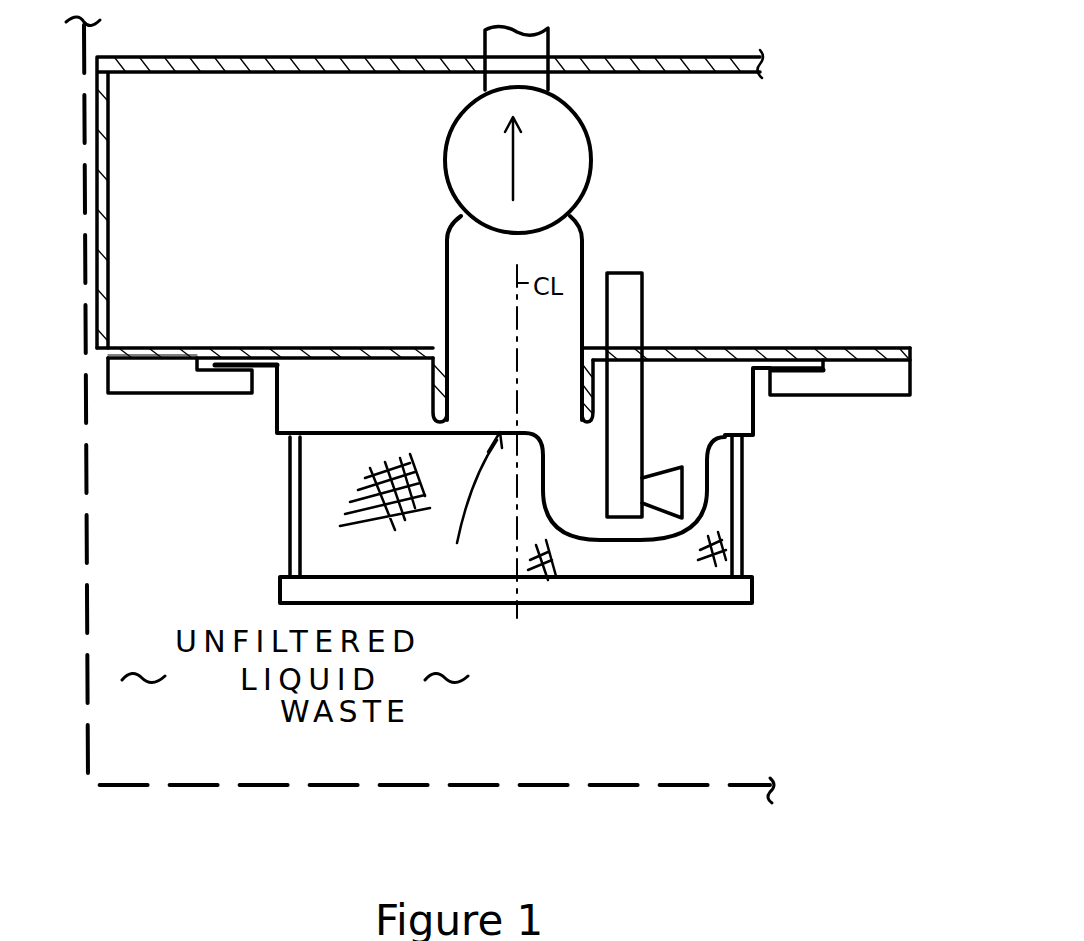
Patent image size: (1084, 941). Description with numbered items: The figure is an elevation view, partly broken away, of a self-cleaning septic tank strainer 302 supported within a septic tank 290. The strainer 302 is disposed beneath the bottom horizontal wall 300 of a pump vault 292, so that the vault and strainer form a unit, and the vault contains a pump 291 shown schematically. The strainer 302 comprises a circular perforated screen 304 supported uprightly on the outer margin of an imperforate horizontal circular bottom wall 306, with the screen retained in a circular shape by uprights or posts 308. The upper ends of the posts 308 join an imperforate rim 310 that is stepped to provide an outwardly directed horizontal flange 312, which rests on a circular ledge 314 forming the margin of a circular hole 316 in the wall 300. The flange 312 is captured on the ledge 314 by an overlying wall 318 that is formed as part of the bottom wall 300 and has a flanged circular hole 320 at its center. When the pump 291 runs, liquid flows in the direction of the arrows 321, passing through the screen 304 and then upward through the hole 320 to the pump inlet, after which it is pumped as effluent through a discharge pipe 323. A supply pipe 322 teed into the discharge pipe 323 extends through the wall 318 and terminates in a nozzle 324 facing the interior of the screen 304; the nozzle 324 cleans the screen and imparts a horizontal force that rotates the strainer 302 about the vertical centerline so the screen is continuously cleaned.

The septic tank 290 is at (283, 790).
The pump 291 is at (441, 186).
The pump vault 292 is at (138, 57).
The bottom horizontal wall 300 is at (160, 370).
The self-cleaning septic tank strainer 302 is at (780, 638).
The circular perforated screen 304 is at (735, 533).
The horizontal circular bottom wall 306 is at (620, 598).
The uprights or posts 308 is at (768, 495).
The imperforate rim 310 is at (273, 413).
The horizontal flange 312 is at (262, 363).
The circular ledge 314 is at (840, 420).
The circular hole 316 is at (760, 393).
The overlying wall 318 is at (853, 318).
The flanged circular hole 320 is at (445, 392).
The arrows 321 is at (510, 427).
The supply pipe 322 is at (633, 297).
The discharge pipe 323 is at (552, 48).
The nozzle 324 is at (695, 490).